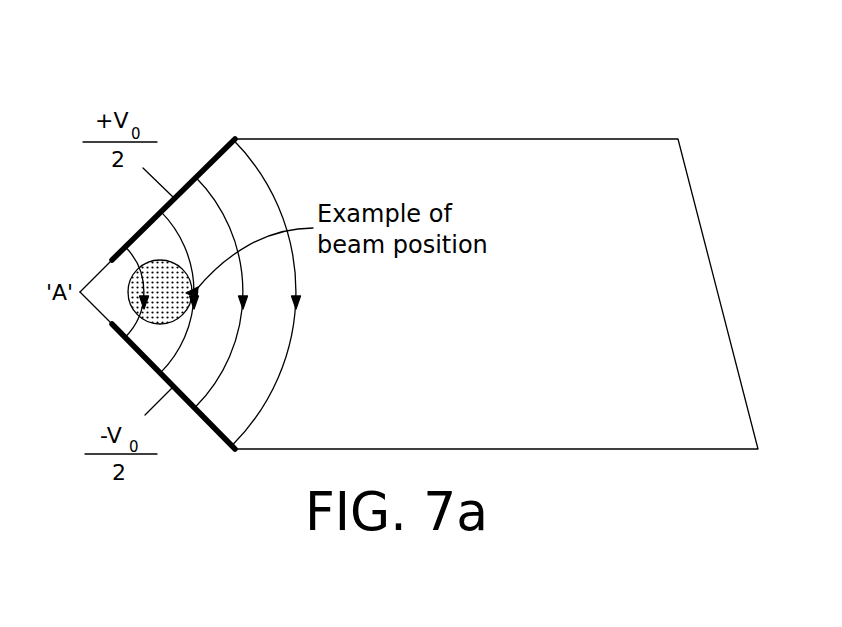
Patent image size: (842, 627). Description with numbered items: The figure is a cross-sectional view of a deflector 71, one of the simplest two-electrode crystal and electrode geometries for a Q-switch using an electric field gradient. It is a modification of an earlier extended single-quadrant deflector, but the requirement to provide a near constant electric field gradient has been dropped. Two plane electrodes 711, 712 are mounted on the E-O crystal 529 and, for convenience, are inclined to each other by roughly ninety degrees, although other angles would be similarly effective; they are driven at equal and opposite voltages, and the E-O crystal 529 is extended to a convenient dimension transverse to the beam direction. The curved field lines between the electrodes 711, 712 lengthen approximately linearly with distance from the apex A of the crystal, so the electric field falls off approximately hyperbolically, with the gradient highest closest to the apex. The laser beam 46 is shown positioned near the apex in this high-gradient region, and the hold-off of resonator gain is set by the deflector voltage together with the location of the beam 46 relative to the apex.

The deflector 71 is at (251, 72).
The electrode 711 is at (232, 139).
The electrode 712 is at (232, 449).
The laser beam 46 is at (126, 291).
The E-O crystal 529 is at (668, 306).